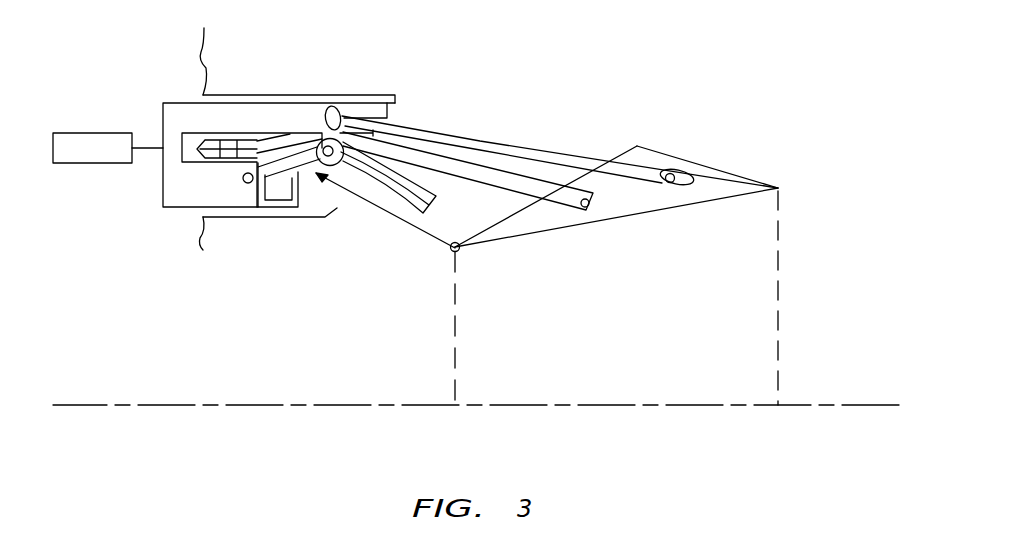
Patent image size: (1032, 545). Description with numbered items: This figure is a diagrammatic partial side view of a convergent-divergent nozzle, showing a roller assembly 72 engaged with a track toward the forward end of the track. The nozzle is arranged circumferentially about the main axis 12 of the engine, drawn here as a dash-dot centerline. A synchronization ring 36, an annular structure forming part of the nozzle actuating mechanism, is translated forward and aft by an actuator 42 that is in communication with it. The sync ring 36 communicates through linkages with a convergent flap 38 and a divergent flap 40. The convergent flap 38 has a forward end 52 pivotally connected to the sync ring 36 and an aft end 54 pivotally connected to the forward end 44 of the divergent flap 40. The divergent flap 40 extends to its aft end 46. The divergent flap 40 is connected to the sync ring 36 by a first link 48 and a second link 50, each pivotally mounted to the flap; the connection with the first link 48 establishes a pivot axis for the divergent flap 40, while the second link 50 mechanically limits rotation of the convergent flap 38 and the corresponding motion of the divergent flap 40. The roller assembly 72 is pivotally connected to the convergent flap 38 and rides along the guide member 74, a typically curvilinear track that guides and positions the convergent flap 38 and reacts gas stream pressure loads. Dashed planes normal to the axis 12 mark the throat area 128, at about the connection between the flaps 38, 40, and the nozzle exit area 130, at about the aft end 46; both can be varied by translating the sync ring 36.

The main axis 12 is at (860, 392).
The synchronization ring 36 is at (271, 115).
The convergent flap 38 is at (370, 203).
The divergent flap 40 is at (622, 219).
The actuator 42 is at (92, 132).
The forward end of divergent flap 44 is at (461, 255).
The aft end of divergent flap 46 is at (778, 188).
The first link 48 is at (497, 177).
The second link 50 is at (553, 150).
The forward end of convergent flap 52 is at (268, 178).
The aft end of convergent flap 54 is at (450, 252).
The roller assembly 72 is at (311, 182).
The guide member 74 is at (427, 181).
The throat area 128 is at (455, 364).
The nozzle exit area 130 is at (778, 262).